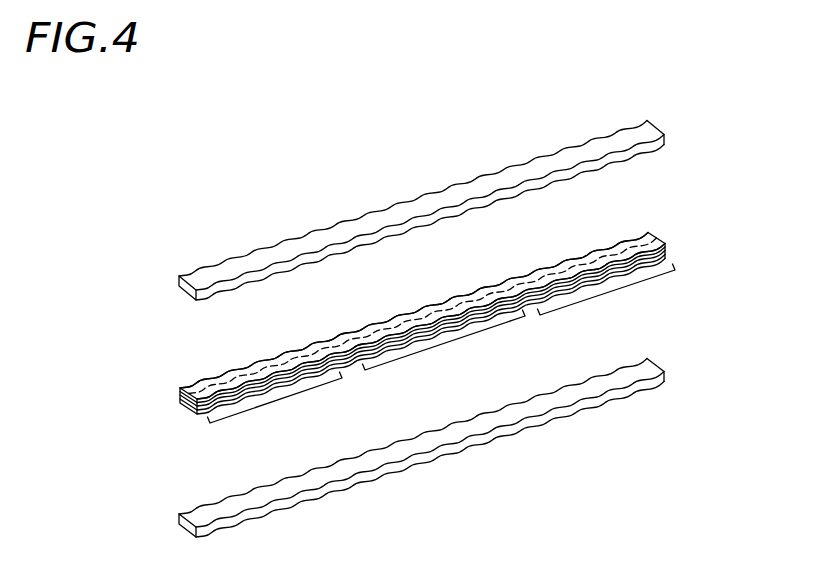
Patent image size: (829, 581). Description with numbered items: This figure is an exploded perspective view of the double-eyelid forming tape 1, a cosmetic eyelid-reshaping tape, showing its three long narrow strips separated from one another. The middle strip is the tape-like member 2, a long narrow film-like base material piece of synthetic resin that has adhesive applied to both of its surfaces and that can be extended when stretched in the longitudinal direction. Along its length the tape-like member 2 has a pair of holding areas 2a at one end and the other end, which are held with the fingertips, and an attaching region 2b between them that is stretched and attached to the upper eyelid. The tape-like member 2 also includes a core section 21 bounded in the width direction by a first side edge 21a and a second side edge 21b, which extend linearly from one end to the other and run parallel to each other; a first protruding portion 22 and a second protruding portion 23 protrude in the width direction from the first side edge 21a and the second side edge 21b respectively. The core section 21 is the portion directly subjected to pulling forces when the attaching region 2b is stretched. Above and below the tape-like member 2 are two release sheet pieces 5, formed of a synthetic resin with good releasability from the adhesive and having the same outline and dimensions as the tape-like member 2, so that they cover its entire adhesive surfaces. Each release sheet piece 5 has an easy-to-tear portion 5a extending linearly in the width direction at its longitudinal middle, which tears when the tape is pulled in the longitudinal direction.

The double-eyelid forming tape 1 is at (722, 48).
The tape-like member 2 is at (669, 244).
The holding area 2a is at (256, 412).
The attaching region 2b is at (437, 354).
The release sheet piece 5 is at (275, 237).
The easy-to-tear portion 5a is at (438, 212).
The core section 21 is at (215, 382).
The first side edge 21a is at (313, 337).
The second side edge 21b is at (330, 379).
The first protruding portion 22 is at (455, 296).
The second protruding portion 23 is at (486, 318).